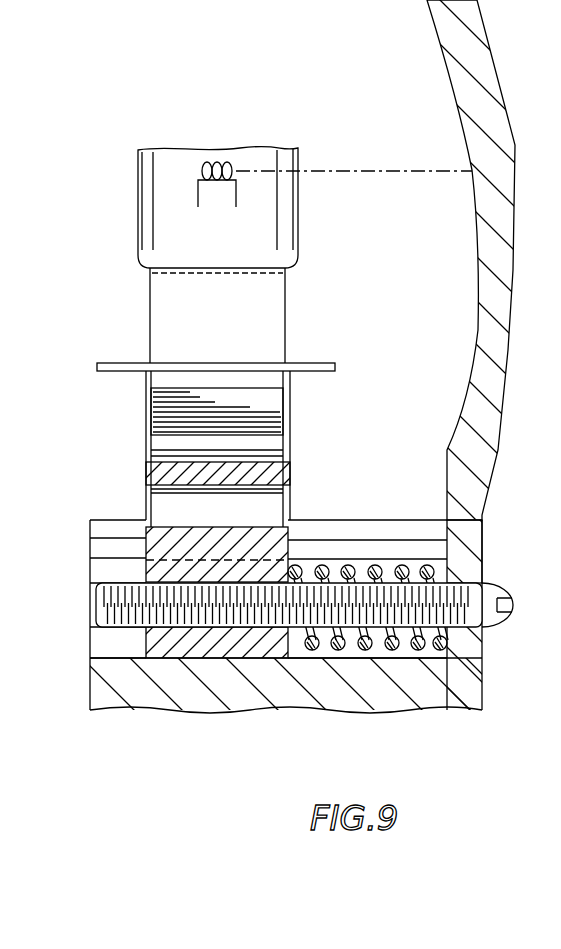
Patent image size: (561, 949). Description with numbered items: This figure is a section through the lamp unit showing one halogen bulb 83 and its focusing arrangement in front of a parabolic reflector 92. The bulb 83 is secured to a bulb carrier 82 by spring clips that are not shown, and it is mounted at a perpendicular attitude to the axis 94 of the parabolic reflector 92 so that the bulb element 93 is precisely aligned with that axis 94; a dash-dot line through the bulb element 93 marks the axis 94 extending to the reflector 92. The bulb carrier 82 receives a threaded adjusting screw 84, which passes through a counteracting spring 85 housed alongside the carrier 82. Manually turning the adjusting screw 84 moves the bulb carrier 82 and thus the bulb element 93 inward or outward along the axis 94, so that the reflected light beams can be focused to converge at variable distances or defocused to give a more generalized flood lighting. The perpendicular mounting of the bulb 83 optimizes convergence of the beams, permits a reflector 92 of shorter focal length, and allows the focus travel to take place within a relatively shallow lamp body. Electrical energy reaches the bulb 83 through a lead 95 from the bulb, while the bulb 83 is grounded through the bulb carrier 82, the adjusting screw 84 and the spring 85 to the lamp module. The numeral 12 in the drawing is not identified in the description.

The housing body 12 is at (87, 0).
The parabolic reflector 92 is at (436, 42).
The bulb element 93 is at (221, 160).
The axis 94 is at (383, 170).
The halogen bulb 83 is at (138, 203).
The lead 95 is at (148, 407).
The bulb carrier 82 is at (143, 478).
The threaded adjusting screw 84 is at (108, 597).
The counteracting spring 85 is at (309, 652).